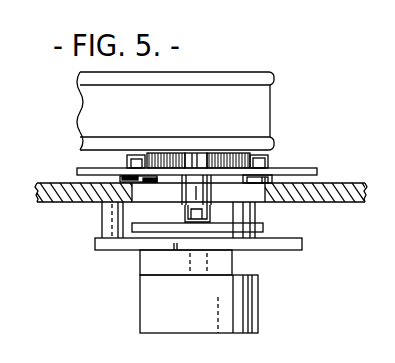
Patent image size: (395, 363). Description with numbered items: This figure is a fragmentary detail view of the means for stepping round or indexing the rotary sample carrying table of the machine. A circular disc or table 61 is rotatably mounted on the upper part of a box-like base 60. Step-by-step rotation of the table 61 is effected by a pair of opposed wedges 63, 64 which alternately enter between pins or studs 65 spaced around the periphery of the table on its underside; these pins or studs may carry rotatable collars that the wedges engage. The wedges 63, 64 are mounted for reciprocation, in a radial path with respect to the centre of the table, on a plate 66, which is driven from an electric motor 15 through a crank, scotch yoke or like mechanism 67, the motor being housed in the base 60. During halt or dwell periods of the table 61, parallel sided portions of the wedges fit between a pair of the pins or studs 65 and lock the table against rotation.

The electric motor 15 is at (240, 320).
The base 60 is at (66, 188).
The table 61 is at (267, 71).
The wedge 63 is at (225, 162).
The wedge 64 is at (162, 153).
The pins or studs 65 is at (190, 156).
The plate 66 is at (285, 168).
The crank, scotch yoke or like mechanism 67 is at (187, 213).